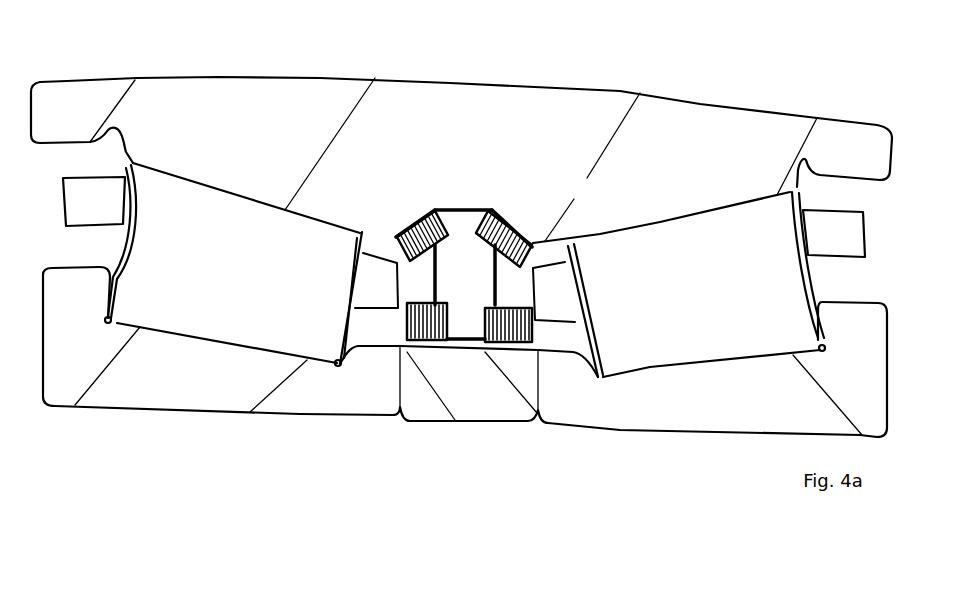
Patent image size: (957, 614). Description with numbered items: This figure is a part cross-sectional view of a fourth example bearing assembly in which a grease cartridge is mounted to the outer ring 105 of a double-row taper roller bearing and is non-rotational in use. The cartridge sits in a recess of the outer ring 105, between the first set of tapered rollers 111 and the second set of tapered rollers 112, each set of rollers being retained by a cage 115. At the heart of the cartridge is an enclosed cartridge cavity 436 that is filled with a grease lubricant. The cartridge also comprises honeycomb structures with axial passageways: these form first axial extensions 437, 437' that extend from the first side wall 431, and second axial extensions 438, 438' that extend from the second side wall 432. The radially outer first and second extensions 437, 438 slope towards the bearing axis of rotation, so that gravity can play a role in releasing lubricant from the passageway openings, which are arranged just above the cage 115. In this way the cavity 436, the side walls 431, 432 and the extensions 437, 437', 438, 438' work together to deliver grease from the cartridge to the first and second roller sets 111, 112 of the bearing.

The outer ring 105 is at (513, 115).
The first set of tapered rollers 111 is at (240, 233).
The second set of tapered rollers 112 is at (693, 253).
The cage 115 is at (368, 277).
The first side wall 431 is at (423, 280).
The second side wall 432 is at (507, 278).
The cartridge cavity 436 is at (452, 277).
The first axial extension 437 is at (387, 207).
The second axial extension 438 is at (535, 221).
The first axial extension 437' is at (368, 392).
The second axial extension 438' is at (545, 395).